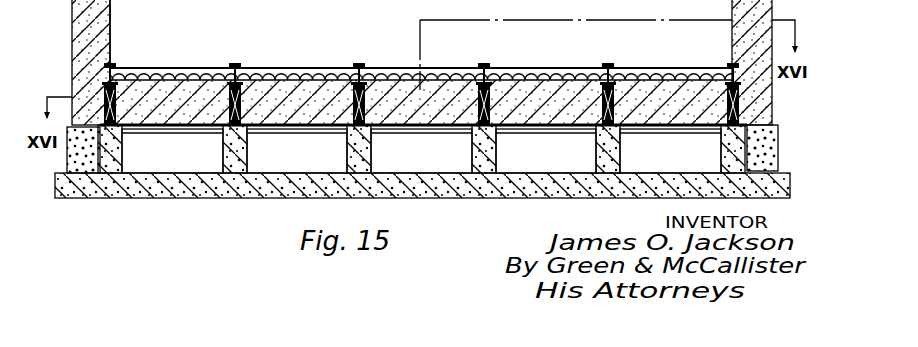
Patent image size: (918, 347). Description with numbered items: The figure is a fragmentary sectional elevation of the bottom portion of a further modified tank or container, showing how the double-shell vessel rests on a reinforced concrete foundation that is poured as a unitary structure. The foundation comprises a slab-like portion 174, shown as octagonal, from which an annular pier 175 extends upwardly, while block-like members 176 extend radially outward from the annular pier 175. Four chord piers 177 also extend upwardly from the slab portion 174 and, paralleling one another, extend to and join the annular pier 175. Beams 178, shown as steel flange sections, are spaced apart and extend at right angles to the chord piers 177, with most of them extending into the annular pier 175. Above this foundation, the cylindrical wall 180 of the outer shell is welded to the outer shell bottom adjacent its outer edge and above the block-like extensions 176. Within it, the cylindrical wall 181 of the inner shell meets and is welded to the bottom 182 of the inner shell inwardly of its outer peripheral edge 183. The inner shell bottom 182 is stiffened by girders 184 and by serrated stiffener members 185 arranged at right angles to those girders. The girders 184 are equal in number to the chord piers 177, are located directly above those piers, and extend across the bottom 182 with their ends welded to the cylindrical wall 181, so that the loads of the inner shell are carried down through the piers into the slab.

The slab-like portion 174 is at (197, 196).
The annular pier 175 is at (123, 157).
The block-like members 176 is at (76, 156).
The chord piers 177 is at (347, 157).
The beams 178 is at (400, 134).
The cylindrical wall of the outer shell 180 is at (72, 23).
The cylindrical wall of the inner shell 181 is at (110, 35).
The bottom of the inner shell 182 is at (147, 77).
The outer peripheral edge 183 is at (106, 82).
The girders 184 is at (359, 63).
The serrated stiffener members 185 is at (266, 67).